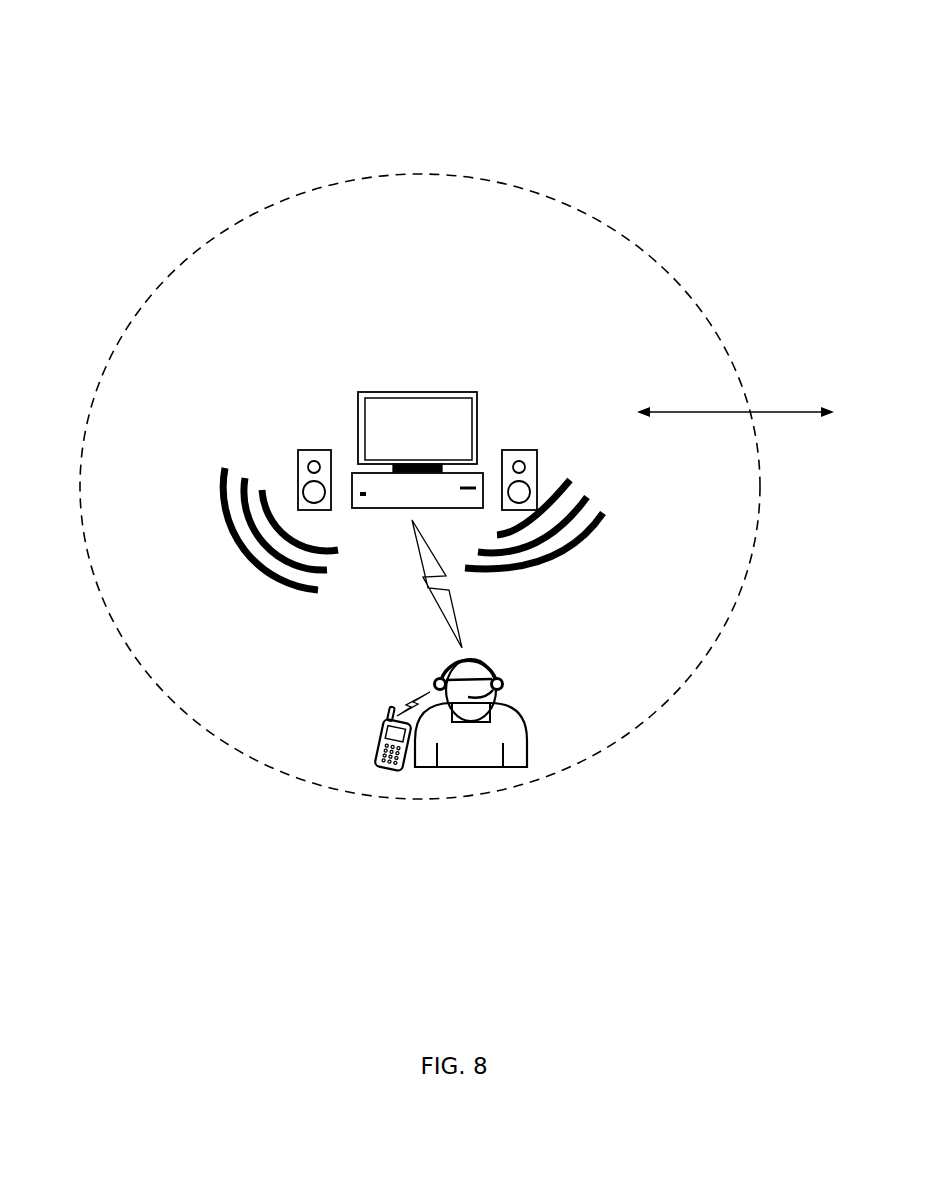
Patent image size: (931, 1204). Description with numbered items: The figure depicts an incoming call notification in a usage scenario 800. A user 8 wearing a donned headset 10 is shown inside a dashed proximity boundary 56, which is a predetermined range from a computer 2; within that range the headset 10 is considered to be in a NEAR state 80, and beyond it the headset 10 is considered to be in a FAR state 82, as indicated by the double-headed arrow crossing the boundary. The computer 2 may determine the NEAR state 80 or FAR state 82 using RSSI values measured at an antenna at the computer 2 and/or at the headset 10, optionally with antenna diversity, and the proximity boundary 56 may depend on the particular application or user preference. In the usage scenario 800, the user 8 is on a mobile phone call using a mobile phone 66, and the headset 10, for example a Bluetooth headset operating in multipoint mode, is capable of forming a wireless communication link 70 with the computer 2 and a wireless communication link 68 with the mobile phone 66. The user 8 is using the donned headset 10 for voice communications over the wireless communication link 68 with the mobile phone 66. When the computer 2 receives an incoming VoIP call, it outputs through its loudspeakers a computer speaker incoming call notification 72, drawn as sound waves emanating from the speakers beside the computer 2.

The usage scenario 800 is at (384, 28).
The computer 2 is at (395, 375).
The user 8 is at (525, 727).
The headset 10 is at (499, 675).
The proximity boundary 56 is at (717, 640).
The mobile phone 66 is at (378, 735).
The wireless communication link 68 is at (408, 697).
The wireless communication link 70 is at (428, 584).
The computer speaker incoming call notification 72 is at (566, 555).
The NEAR state 80 is at (731, 447).
The FAR state 82 is at (808, 447).